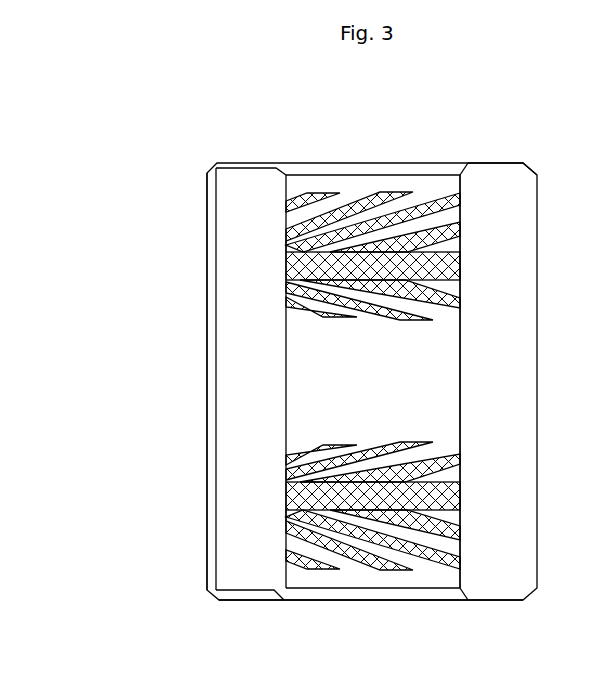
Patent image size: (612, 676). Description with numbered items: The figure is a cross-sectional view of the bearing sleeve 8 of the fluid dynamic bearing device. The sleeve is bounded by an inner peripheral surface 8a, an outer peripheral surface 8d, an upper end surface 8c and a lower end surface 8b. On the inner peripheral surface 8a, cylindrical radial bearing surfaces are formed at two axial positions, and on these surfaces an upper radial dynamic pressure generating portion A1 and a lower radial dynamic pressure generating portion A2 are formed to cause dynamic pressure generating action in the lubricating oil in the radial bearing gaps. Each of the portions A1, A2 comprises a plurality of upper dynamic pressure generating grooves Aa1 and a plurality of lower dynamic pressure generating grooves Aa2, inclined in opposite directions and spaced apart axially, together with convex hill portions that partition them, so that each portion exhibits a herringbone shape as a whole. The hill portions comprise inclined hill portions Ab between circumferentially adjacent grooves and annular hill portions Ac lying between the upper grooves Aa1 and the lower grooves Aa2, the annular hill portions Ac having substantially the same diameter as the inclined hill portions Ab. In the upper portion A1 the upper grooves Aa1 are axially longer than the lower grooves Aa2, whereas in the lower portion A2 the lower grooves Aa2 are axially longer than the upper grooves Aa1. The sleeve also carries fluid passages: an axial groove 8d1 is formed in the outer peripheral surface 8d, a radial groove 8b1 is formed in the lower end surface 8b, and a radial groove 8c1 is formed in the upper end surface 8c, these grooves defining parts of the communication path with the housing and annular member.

The bearing sleeve 8 is at (187, 188).
The inner peripheral surface 8a is at (450, 405).
The lower end surface 8b is at (257, 600).
The radial groove 8b1 is at (240, 598).
The upper end surface 8c is at (478, 163).
The radial groove 8c1 is at (248, 163).
The outer peripheral surface 8d is at (207, 322).
The axial groove 8d1 is at (216, 377).
The upper radial dynamic pressure generating portion A1 is at (287, 248).
The lower radial dynamic pressure generating portion A2 is at (287, 512).
The upper dynamic pressure generating grooves Aa1 is at (333, 203).
The lower dynamic pressure generating grooves Aa2 is at (360, 308).
The inclined hill portions Ab is at (381, 195).
The annular hill portions Ac is at (297, 268).